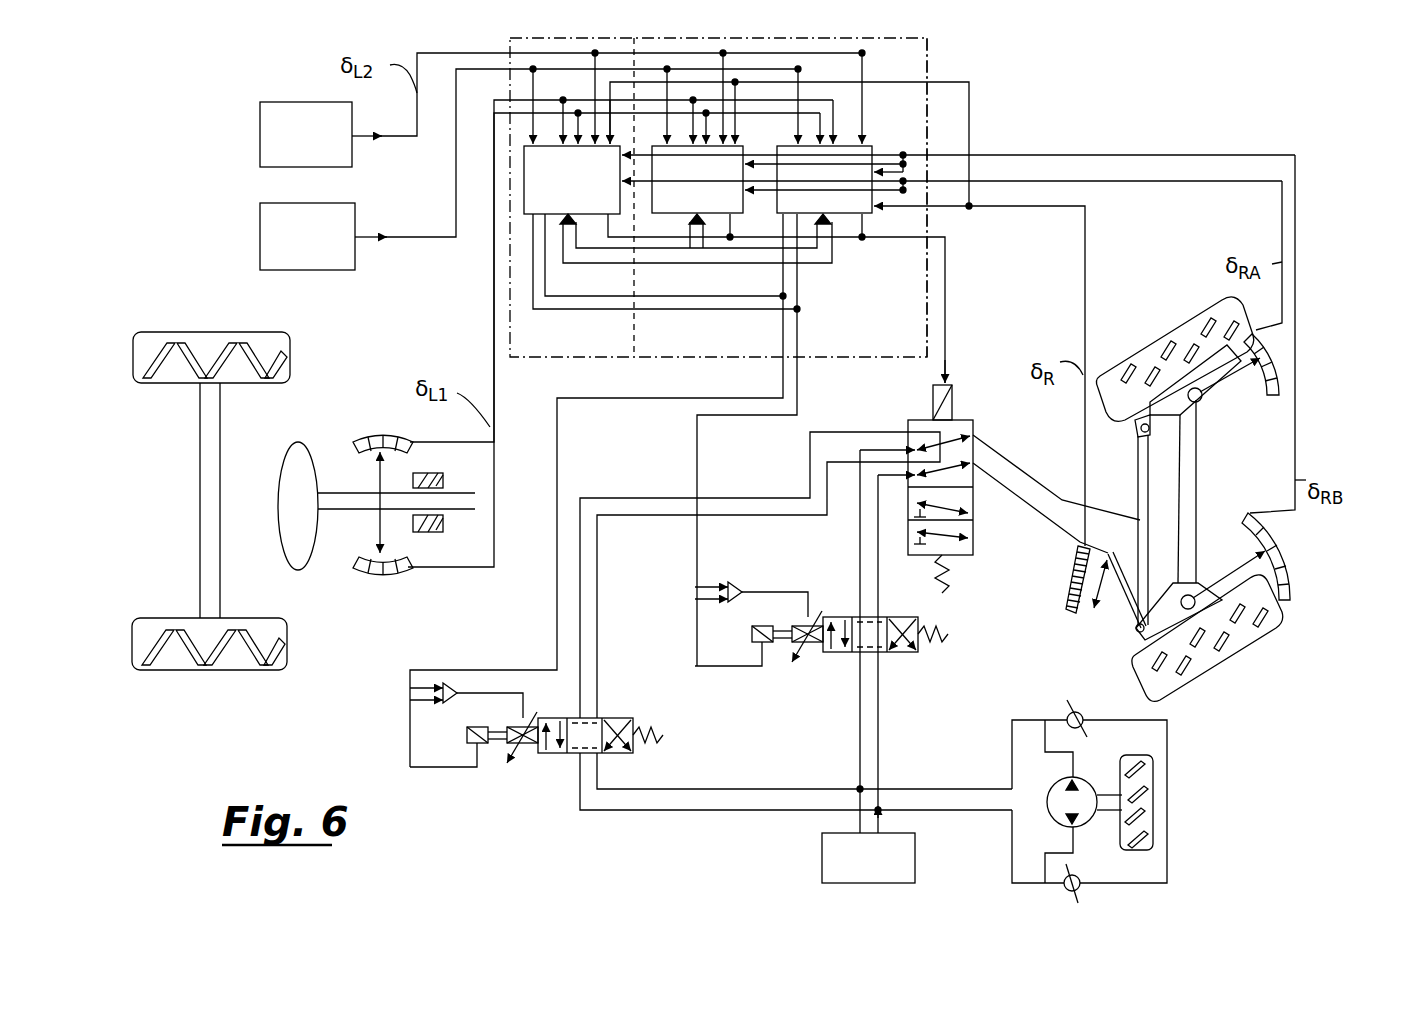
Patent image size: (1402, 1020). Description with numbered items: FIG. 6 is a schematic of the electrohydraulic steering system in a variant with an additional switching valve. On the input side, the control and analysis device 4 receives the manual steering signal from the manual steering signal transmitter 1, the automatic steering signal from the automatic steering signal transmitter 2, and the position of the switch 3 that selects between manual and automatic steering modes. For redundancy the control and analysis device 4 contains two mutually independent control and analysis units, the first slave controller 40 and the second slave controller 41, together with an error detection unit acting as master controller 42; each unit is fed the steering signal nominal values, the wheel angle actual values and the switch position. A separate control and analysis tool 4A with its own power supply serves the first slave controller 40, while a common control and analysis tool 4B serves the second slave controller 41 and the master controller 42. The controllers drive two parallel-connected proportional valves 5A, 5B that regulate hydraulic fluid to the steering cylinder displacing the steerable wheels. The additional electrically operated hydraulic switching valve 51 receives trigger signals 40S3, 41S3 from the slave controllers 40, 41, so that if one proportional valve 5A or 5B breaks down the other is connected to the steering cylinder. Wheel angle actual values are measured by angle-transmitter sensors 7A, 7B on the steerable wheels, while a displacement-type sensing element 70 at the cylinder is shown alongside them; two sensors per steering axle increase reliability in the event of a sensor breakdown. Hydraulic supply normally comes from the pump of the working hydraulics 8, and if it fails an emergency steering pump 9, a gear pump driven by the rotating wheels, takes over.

The manual steering signal transmitter 1 is at (367, 555).
The automatic steering signal transmitter 2 is at (306, 134).
The switch 3 is at (307, 236).
The control and analysis device 4 is at (930, 62).
The control and analysis tool 4A is at (522, 280).
The control and analysis tool 4B is at (910, 132).
The first slave controller 40 is at (572, 180).
The second slave controller 41 is at (824, 180).
The error detection unit 42 is at (697, 179).
The trigger signal 40S3 is at (625, 237).
The trigger signal 41S3 is at (850, 240).
The proportional valve 5A is at (840, 655).
The proportional valve 5B is at (557, 757).
The switching valve 51 is at (923, 417).
The sensor 7A is at (1272, 375).
The sensor 7B is at (1288, 580).
The steering cylinder 70 is at (1068, 581).
The pump of the working hydraulics 8 is at (868, 858).
The emergency steering pump 9 is at (1089, 801).